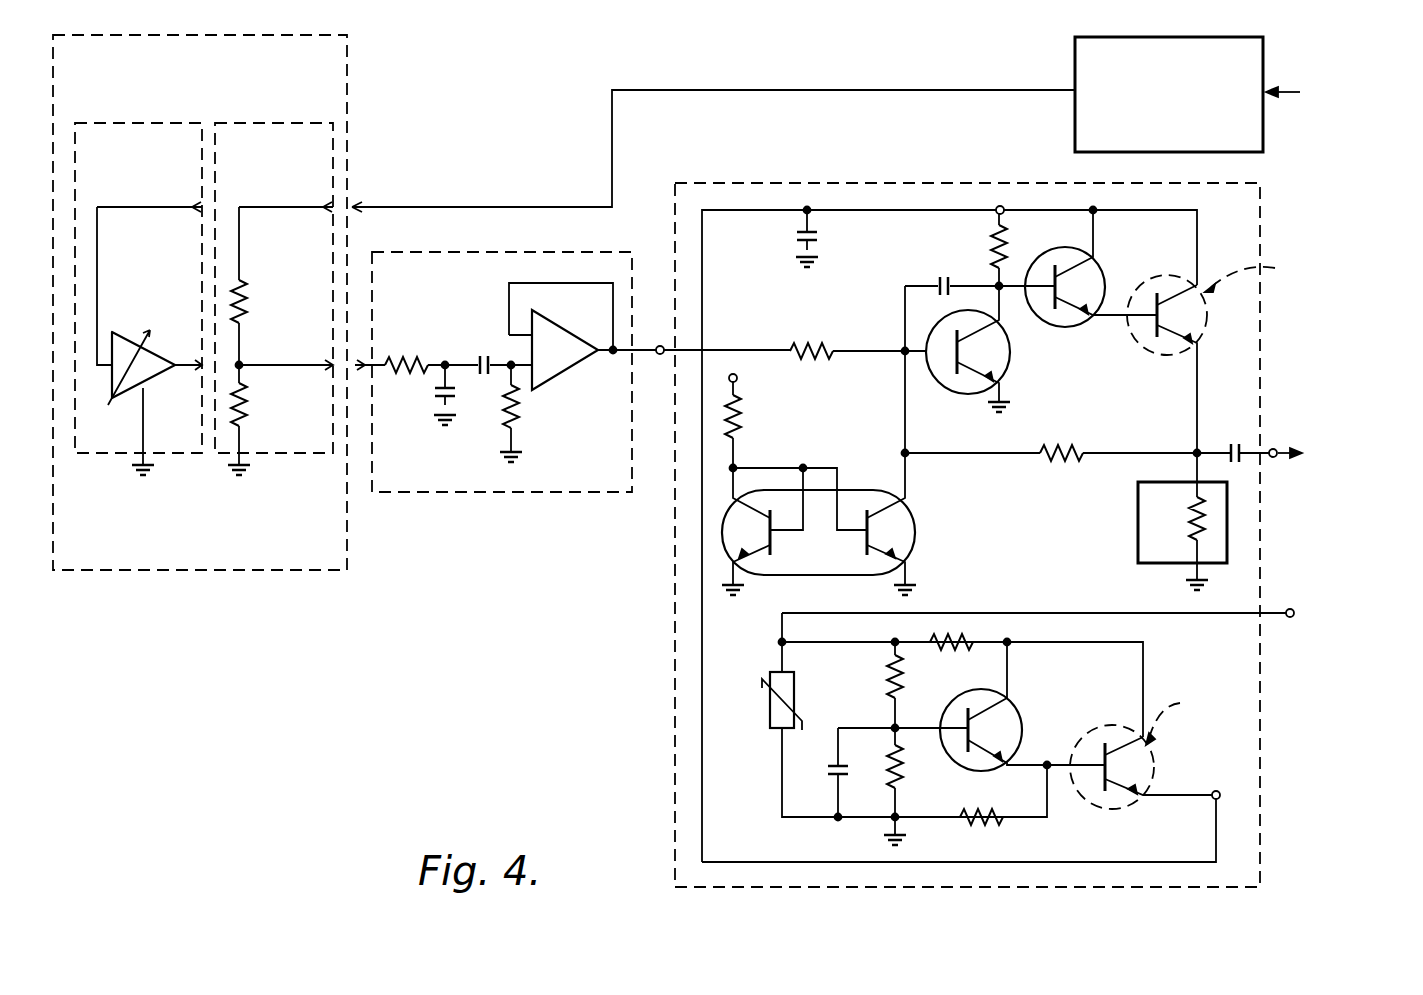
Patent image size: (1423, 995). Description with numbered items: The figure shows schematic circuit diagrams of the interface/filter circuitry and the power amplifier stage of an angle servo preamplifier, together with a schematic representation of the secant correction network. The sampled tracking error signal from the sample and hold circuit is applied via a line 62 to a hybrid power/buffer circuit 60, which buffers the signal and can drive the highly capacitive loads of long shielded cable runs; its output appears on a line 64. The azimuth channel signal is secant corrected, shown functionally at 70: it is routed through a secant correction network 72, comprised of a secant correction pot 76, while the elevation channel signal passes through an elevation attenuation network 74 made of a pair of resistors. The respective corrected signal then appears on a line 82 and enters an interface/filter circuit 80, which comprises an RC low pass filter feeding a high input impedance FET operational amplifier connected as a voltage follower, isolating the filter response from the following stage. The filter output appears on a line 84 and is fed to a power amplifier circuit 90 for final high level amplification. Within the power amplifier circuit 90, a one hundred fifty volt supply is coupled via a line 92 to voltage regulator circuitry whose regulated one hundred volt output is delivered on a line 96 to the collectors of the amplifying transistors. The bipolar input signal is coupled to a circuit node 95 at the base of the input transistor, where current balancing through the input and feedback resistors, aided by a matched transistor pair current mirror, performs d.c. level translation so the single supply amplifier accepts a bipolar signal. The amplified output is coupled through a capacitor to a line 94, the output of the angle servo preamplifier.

The hybrid power/buffer circuit 60 is at (1075, 50).
The line 62 is at (1285, 95).
The line 64 is at (885, 90).
The secant correction process 70 is at (350, 100).
The secant correction network 72 is at (138, 274).
The elevation attenuation network 74 is at (250, 123).
The secant correction pot 76 is at (150, 372).
The interface/filter circuit 80 is at (509, 353).
The line 82 is at (362, 365).
The line 84 is at (630, 360).
The power amplifier circuit 90 is at (785, 183).
The line 92 is at (1268, 613).
The line 94 is at (1265, 448).
The circuit node 95 is at (900, 345).
The line 96 is at (1115, 862).